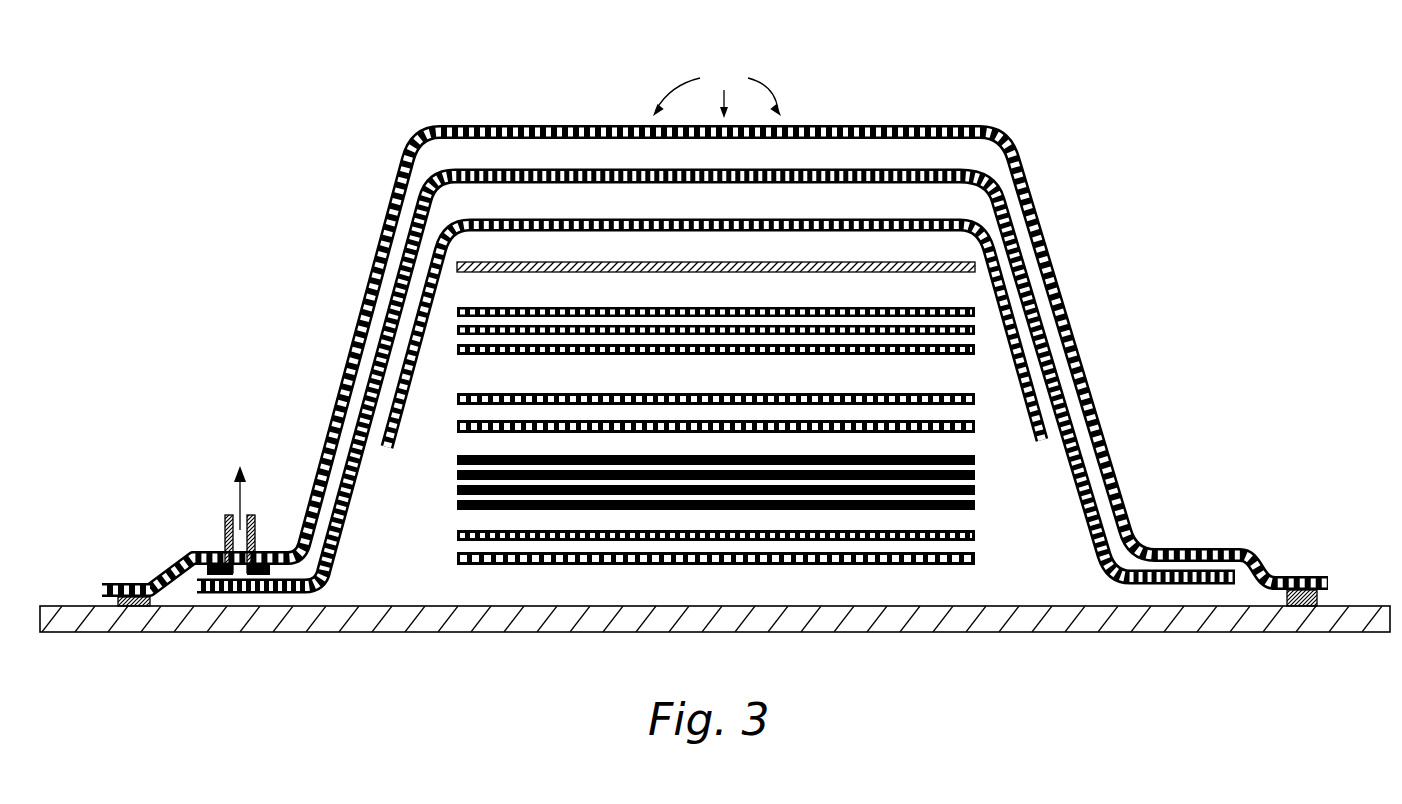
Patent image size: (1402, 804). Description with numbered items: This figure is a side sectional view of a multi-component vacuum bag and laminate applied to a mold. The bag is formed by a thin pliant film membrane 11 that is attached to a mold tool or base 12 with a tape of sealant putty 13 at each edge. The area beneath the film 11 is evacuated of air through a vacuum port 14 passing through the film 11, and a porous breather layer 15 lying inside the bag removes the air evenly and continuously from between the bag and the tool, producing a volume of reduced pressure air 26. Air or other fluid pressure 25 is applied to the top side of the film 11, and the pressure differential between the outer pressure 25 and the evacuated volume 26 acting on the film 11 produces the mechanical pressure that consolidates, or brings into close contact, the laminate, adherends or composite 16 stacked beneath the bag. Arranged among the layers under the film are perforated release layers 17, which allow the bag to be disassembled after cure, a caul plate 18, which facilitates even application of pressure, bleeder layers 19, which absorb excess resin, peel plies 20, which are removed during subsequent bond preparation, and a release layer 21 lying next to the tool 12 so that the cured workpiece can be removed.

The thin pliant film membrane 11 is at (1093, 402).
The mold tool or base 12 is at (1170, 632).
The tape of sealant putty 13 is at (118, 600).
The vacuum port 14 is at (225, 524).
The porous breather layer 15 is at (343, 540).
The laminate, adherends or composite 16 is at (995, 487).
The perforated release layers 17 is at (1000, 366).
The caul plate 18 is at (975, 262).
The bleeder layers 19 is at (975, 347).
The peel plies 20 is at (457, 427).
The release layer 21 is at (457, 557).
The air or other fluid pressure 25 is at (717, 90).
The volume of reduced pressure air 26 is at (1052, 564).